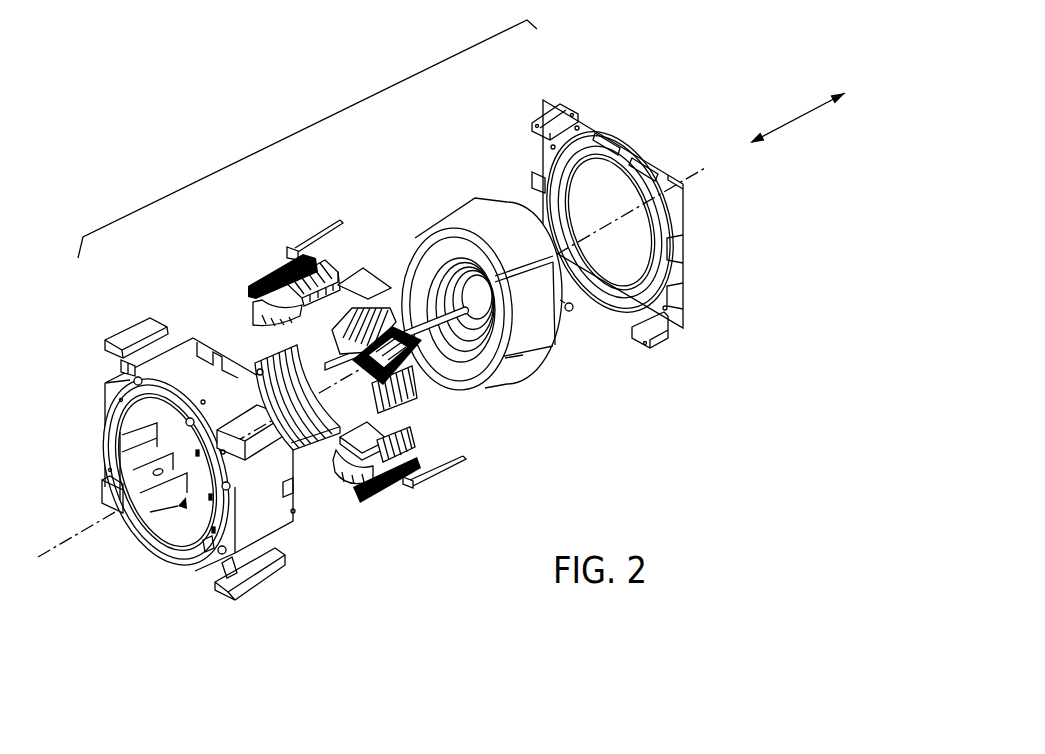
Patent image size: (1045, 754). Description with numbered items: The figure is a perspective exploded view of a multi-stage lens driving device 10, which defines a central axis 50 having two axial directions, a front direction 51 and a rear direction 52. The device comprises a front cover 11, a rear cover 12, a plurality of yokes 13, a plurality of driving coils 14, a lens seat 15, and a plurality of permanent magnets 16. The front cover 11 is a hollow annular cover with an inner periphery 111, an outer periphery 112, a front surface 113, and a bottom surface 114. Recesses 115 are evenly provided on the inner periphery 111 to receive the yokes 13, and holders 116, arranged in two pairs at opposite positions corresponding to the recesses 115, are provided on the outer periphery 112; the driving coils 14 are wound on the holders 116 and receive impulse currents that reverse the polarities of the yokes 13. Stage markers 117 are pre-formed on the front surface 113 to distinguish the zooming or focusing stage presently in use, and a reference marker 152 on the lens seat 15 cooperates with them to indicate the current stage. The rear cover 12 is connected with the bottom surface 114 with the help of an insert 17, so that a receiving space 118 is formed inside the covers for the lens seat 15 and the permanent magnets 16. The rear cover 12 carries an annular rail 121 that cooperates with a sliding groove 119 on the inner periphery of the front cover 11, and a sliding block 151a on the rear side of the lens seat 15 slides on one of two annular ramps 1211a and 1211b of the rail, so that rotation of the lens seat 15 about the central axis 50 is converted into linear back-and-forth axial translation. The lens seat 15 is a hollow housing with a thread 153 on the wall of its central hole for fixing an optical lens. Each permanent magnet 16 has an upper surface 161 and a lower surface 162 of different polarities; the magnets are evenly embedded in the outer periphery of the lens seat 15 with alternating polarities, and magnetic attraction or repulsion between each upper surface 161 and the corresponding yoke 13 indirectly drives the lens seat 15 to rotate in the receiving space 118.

The multi-stage lens driving device 10 is at (304, 123).
The front cover 11 is at (185, 429).
The rear cover 12 is at (600, 193).
The yokes 13 is at (240, 300).
The driving coils 14 is at (303, 253).
The lens seat 15 is at (404, 256).
The permanent magnets 16 is at (516, 265).
The insert 17 is at (363, 280).
The central axis 50 is at (693, 175).
The front direction 51 is at (758, 133).
The rear direction 52 is at (826, 100).
The inner periphery 111 is at (128, 422).
The outer periphery 112 is at (180, 357).
The front surface 113 is at (107, 407).
The bottom surface 114 is at (295, 490).
The recesses 115 is at (138, 480).
The holders 116 is at (115, 370).
The stage markers 117 is at (207, 547).
The receiving space 118 is at (185, 510).
The sliding groove 119 is at (203, 497).
The annular rail 121 is at (523, 165).
The sliding block 151a is at (574, 310).
The reference marker 152 is at (417, 252).
The thread 153 is at (467, 353).
The upper surface 161 is at (558, 350).
The lower surface 162 is at (535, 330).
The annular ramp 1211a is at (588, 128).
The annular ramp 1211b is at (652, 310).